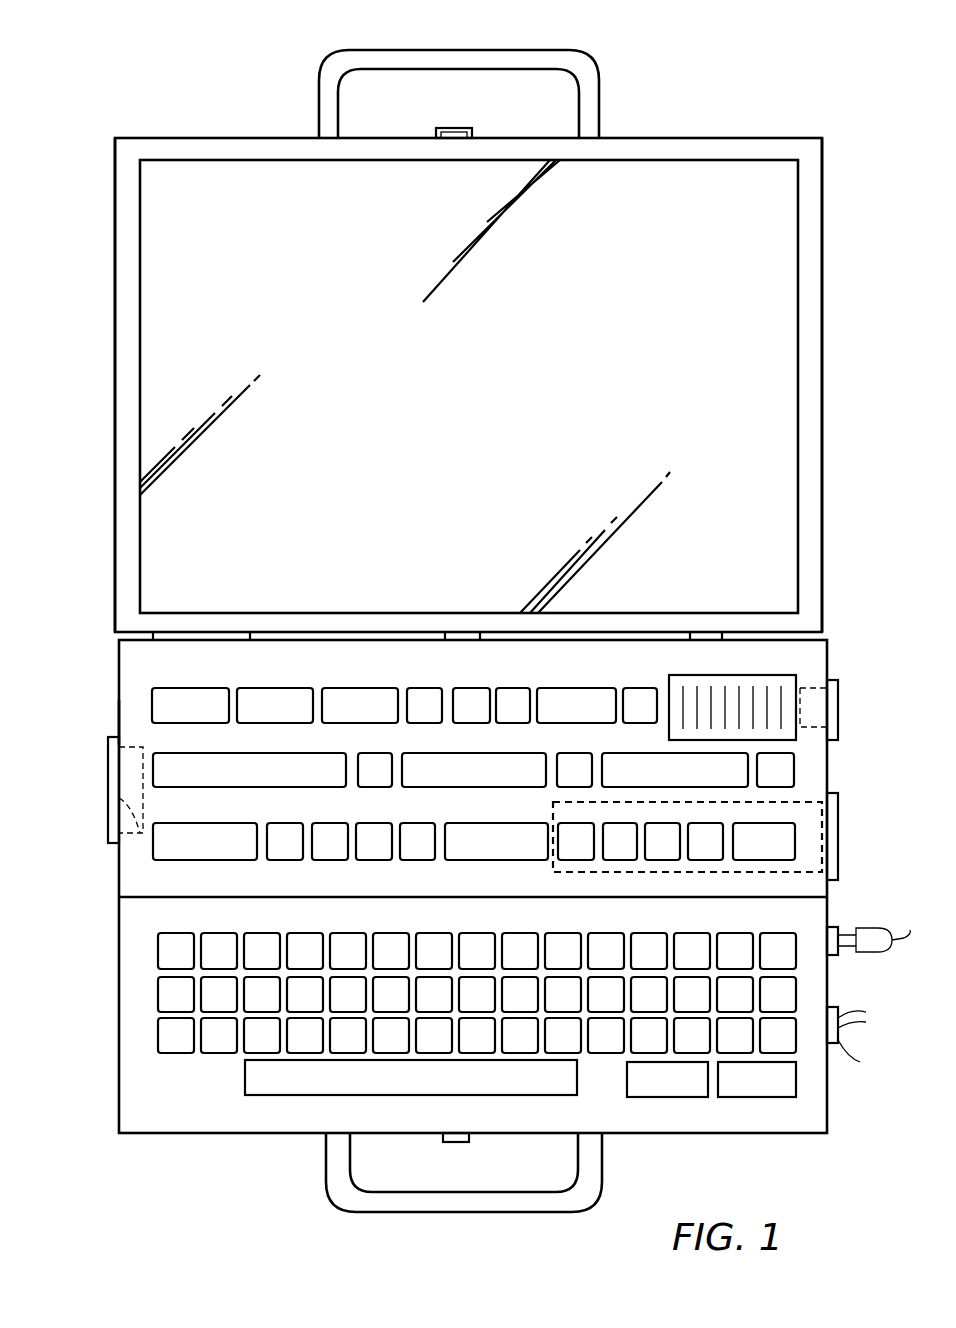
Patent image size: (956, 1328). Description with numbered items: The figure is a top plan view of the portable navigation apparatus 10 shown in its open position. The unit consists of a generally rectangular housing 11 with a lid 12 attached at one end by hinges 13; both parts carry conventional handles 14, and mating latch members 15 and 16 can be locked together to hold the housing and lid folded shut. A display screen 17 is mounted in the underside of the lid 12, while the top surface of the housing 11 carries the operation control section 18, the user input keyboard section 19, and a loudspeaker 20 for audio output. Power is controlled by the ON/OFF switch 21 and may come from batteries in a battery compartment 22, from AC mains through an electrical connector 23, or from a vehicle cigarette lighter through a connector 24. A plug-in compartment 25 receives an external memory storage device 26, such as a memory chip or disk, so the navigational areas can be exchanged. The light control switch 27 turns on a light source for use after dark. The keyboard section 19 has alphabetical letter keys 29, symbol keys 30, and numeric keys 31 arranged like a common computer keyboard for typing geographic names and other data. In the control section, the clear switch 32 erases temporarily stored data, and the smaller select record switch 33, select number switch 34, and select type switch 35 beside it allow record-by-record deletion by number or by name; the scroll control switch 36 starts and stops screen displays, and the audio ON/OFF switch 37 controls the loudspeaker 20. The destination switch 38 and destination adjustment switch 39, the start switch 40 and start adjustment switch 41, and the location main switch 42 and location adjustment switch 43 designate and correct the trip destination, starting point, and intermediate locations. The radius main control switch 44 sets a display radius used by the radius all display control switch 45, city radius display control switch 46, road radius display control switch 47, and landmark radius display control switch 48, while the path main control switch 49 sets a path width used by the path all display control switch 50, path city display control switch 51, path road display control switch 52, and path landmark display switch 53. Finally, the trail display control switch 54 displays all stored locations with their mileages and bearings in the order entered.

The portable navigation apparatus 10 is at (792, 100).
The housing 11 is at (119, 695).
The lid 12 is at (115, 470).
The hinges 13 is at (228, 634).
The handles 14 is at (415, 58).
The latch member 15 is at (460, 1143).
The latch member 16 is at (462, 127).
The display screen 17 is at (480, 400).
The operation control section 18 is at (110, 722).
The user input keyboard section 19 is at (456, 1036).
The loudspeaker 20 is at (750, 690).
The ON/OFF switch 21 is at (205, 688).
The battery compartment 22 is at (822, 806).
The electrical connector 23 is at (828, 927).
The connector 24 is at (850, 1042).
The plug-in compartment 25 is at (110, 804).
The external memory storage device 26 is at (108, 764).
The light control switch 27 is at (295, 688).
The alphabetical letter keys 29 is at (352, 928).
The symbol keys 30 is at (602, 1080).
The numeric keys 31 is at (808, 985).
The clear switch 32 is at (378, 688).
The select record switch 33 is at (426, 688).
The select number switch 34 is at (471, 688).
The select type switch 35 is at (512, 688).
The scroll control switch 36 is at (590, 688).
The audio ON/OFF switch 37 is at (652, 672).
The destination switch 38 is at (258, 754).
The destination adjustment switch 39 is at (388, 754).
The start switch 40 is at (478, 754).
The start adjustment switch 41 is at (580, 754).
The location main switch 42 is at (652, 754).
The location adjustment switch 43 is at (790, 772).
The radius main control switch 44 is at (212, 823).
The radius all display control switch 45 is at (292, 823).
The city radius display control switch 46 is at (340, 823).
The road radius display control switch 47 is at (386, 823).
The landmark radius display control switch 48 is at (432, 823).
The path main control switch 49 is at (498, 823).
The path all display control switch 50 is at (590, 830).
The path city display control switch 51 is at (626, 855).
The path road display control switch 52 is at (652, 830).
The path landmark display switch 53 is at (713, 848).
The trail display control switch 54 is at (795, 831).